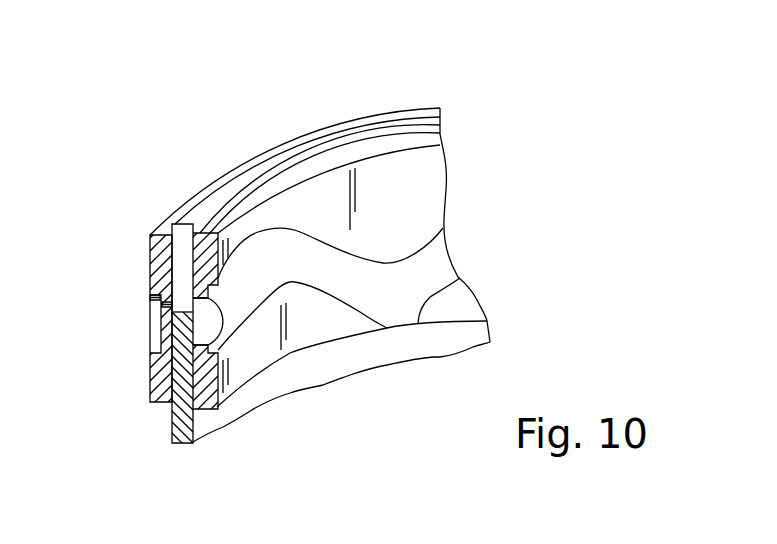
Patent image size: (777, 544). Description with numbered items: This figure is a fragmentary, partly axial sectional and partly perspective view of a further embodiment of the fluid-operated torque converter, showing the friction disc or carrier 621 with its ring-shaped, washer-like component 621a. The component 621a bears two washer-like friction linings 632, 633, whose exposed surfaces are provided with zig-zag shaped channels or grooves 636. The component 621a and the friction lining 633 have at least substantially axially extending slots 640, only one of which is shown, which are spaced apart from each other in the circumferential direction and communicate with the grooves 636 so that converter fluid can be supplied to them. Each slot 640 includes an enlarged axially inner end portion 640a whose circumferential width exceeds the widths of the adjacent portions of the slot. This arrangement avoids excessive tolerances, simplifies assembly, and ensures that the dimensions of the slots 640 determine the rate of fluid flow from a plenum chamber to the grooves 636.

The friction disc or carrier 621 is at (280, 112).
The ring-shaped component 621a is at (232, 405).
The friction lining 633 is at (207, 242).
The slots 640 is at (183, 262).
The friction lining 632 is at (162, 272).
The enlarged axially inner end portions 640a is at (167, 328).
The zig-zag shaped channels or grooves 636 is at (427, 272).